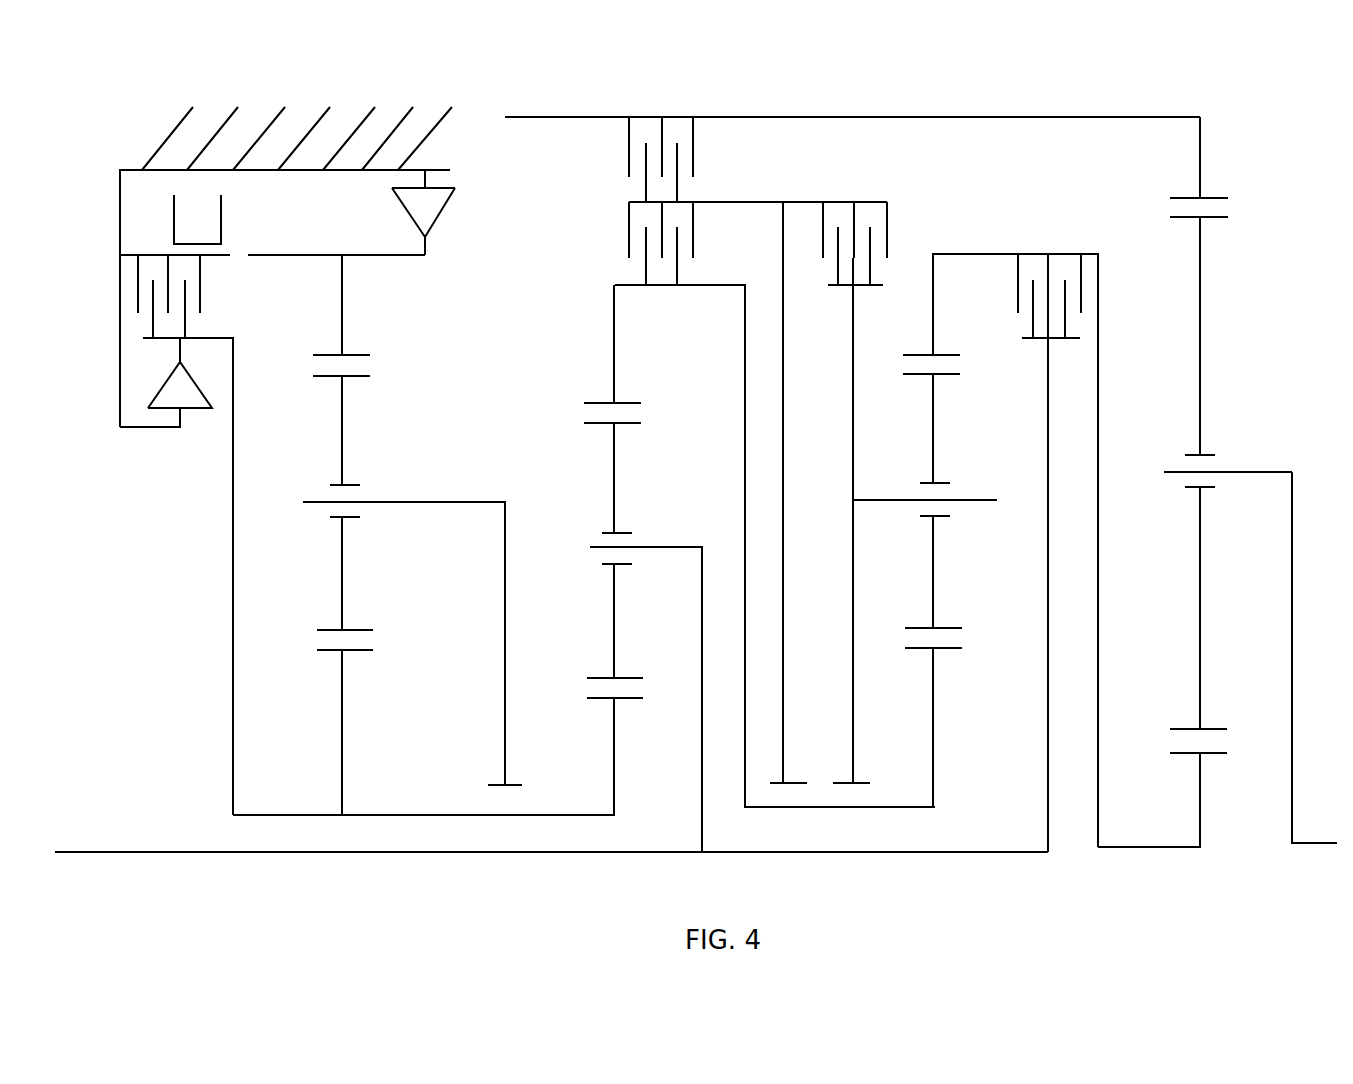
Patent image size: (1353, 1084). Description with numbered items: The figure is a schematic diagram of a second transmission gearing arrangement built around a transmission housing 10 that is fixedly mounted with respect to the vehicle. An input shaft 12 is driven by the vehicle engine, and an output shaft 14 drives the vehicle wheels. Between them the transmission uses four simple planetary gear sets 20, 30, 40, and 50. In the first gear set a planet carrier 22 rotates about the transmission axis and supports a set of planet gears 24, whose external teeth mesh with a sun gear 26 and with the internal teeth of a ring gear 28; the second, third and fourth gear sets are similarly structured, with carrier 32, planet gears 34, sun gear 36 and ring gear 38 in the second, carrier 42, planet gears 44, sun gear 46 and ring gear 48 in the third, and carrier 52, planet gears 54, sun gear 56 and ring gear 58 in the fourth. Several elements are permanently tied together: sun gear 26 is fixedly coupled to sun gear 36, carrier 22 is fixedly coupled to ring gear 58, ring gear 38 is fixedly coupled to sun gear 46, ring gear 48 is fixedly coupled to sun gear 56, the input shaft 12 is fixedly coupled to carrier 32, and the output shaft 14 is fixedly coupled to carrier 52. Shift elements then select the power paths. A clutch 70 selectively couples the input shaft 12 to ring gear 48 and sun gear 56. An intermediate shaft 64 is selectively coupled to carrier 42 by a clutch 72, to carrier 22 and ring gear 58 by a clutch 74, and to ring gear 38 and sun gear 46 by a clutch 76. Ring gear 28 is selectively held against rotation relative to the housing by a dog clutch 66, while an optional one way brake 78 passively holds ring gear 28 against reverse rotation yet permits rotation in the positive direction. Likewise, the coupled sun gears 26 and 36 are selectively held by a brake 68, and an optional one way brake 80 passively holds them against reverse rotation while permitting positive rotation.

The transmission housing 10 is at (178, 122).
The input shaft 12 is at (270, 847).
The output shaft 14 is at (1337, 843).
The first planetary gear set 20 is at (424, 583).
The planet carrier 22 is at (505, 640).
The planet gears 24 is at (348, 437).
The sun gear 26 is at (340, 693).
The ring gear 28 is at (343, 315).
The second planetary gear set 30 is at (742, 597).
The planet carrier 32 is at (707, 647).
The planet gears 34 is at (618, 485).
The sun gear 36 is at (613, 740).
The ring gear 38 is at (615, 362).
The third planetary gear set 40 is at (945, 582).
The planet carrier 42 is at (852, 458).
The planet gears 44 is at (937, 435).
The sun gear 46 is at (932, 692).
The ring gear 48 is at (933, 313).
The fourth planetary gear set 50 is at (1199, 510).
The planet carrier 52 is at (1275, 472).
The planet gears 54 is at (1200, 400).
The sun gear 56 is at (1197, 800).
The ring gear 58 is at (1195, 167).
The intermediate shaft 64 is at (785, 330).
The dog clutch 66 is at (222, 222).
The brake 68 is at (200, 300).
The clutch 70 is at (1063, 252).
The clutch 72 is at (838, 200).
The clutch 74 is at (628, 160).
The clutch 76 is at (628, 235).
The one way brake 78 is at (433, 222).
The one way brake 80 is at (197, 410).